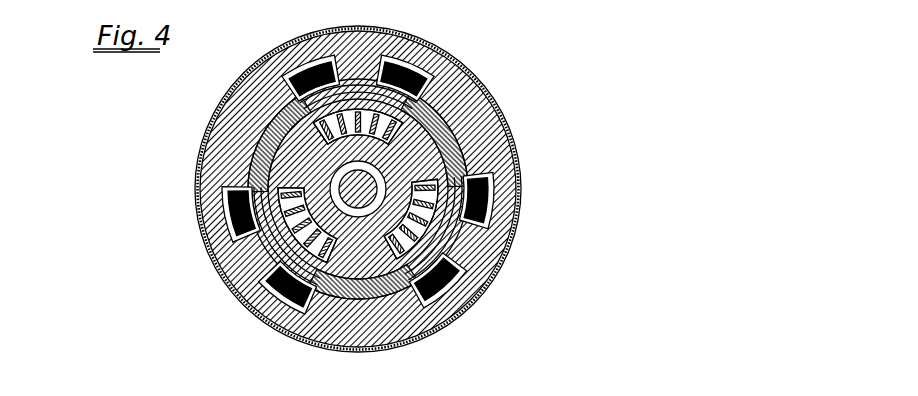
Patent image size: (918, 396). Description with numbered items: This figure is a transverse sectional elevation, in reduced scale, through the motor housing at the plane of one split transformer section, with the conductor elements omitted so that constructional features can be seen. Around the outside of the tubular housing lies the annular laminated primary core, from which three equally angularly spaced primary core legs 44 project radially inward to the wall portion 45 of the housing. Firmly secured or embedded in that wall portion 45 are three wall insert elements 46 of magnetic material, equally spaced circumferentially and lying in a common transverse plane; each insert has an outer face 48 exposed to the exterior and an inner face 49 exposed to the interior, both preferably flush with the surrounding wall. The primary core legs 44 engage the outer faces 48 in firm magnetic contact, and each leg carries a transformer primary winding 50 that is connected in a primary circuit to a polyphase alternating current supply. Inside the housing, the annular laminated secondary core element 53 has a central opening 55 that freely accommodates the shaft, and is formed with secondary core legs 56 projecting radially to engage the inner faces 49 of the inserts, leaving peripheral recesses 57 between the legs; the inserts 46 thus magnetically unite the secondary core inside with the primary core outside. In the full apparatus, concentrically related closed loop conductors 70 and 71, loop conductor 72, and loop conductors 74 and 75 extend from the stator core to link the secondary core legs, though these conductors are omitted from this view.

The primary core legs 44 is at (432, 101).
The wall portion of the tubular housing 45 is at (369, 78).
The wall insert elements 46 is at (318, 113).
The outer face of wall insert 48 is at (445, 117).
The inner face of wall insert 49 is at (452, 137).
The transformer primary winding 50 is at (409, 72).
The secondary core element 53 is at (292, 338).
The central opening 55 is at (342, 164).
The secondary core legs 56 is at (283, 163).
The peripheral recesses 57 is at (300, 238).
The closed loop conductor 70 is at (440, 227).
The closed loop conductor 71 is at (428, 231).
The loop conductor 72 is at (262, 231).
The loop conductor 74 is at (343, 100).
The loop conductor 75 is at (355, 106).